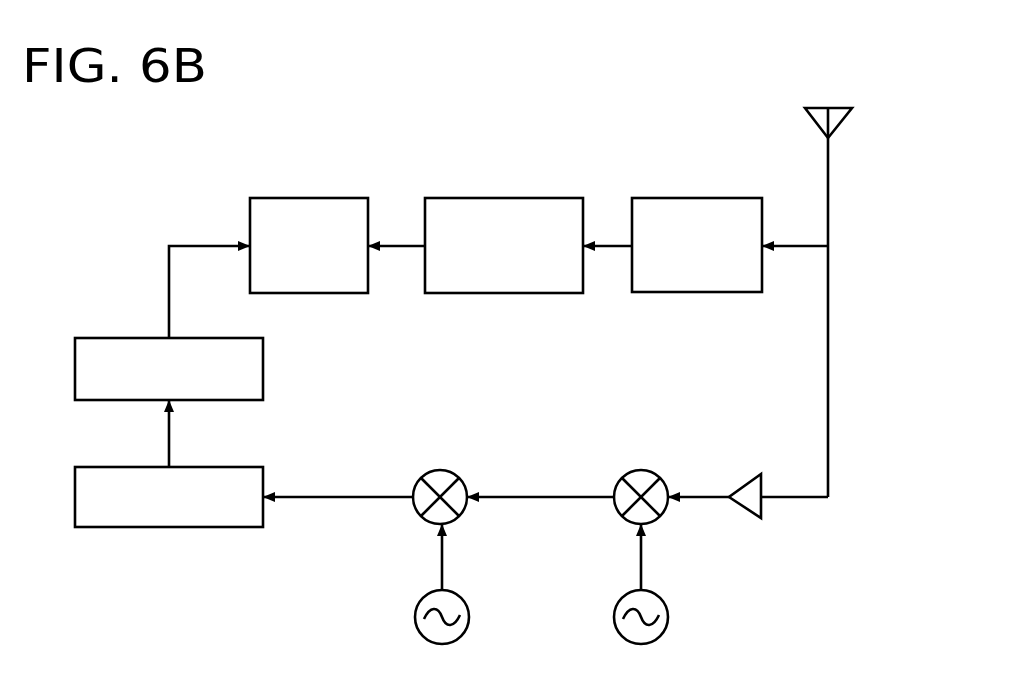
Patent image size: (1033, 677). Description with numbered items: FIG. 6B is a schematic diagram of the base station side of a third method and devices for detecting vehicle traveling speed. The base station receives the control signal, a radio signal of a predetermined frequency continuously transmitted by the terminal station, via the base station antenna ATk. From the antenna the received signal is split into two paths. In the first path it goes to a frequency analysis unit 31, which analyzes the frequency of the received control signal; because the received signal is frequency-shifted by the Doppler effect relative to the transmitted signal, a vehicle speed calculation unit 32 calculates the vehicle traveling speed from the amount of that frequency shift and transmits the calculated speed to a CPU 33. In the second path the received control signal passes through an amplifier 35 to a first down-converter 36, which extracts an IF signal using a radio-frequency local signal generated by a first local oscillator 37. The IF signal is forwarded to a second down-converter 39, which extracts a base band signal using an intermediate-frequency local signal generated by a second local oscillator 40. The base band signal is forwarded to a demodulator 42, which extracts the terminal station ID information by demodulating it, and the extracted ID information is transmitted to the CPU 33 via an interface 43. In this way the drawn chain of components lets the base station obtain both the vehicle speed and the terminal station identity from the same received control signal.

The base station antenna ATk is at (838, 106).
The frequency analysis unit 31 is at (740, 196).
The vehicle speed calculation unit 32 is at (560, 196).
The CPU 33 is at (345, 196).
The amplifier 35 is at (750, 475).
The first down-converter 36 is at (655, 471).
The first local oscillator 37 is at (665, 603).
The second down-converter 39 is at (452, 471).
The second local oscillator 40 is at (466, 603).
The demodulator 42 is at (242, 465).
The interface 43 is at (265, 372).